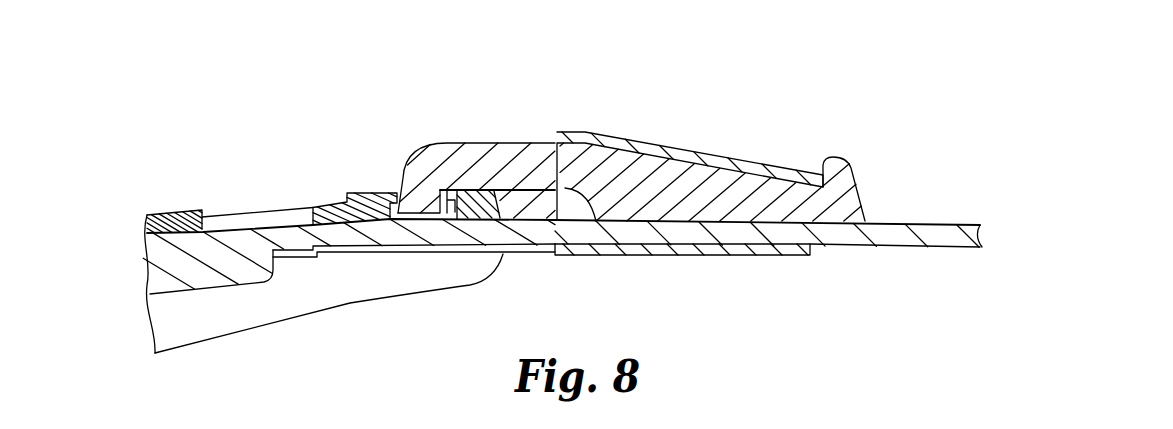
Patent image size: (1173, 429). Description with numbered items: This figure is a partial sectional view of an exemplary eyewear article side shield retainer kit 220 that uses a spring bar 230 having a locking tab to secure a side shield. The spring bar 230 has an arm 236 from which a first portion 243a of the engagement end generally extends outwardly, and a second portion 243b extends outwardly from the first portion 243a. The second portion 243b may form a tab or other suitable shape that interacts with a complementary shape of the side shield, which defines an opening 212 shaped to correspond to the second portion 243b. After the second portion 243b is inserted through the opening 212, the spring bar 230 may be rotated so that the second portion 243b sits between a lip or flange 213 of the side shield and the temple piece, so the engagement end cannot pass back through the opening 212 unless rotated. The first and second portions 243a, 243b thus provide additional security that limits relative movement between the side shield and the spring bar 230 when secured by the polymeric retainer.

The retainer kit 220 is at (769, 105).
The spring bar 230 is at (682, 170).
The arm 236 is at (440, 142).
The lip or flange 213 is at (451, 189).
The opening 212 is at (433, 208).
The first portion 243a is at (397, 197).
The second portion 243b is at (417, 203).